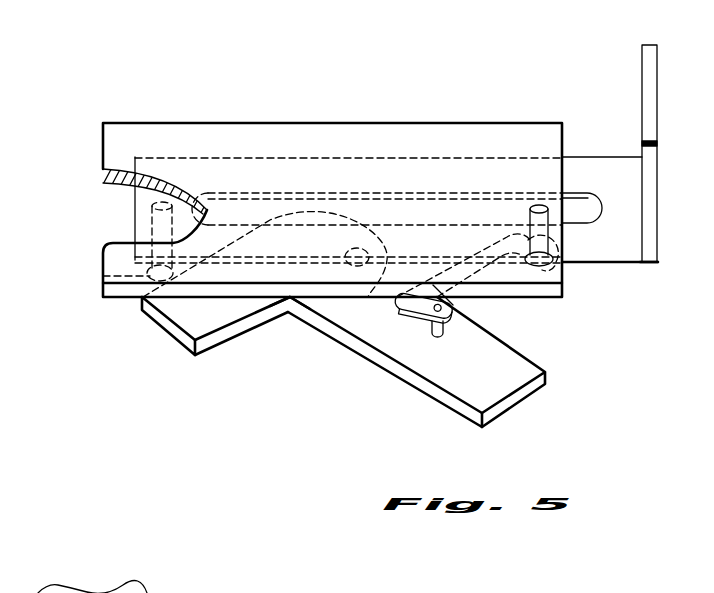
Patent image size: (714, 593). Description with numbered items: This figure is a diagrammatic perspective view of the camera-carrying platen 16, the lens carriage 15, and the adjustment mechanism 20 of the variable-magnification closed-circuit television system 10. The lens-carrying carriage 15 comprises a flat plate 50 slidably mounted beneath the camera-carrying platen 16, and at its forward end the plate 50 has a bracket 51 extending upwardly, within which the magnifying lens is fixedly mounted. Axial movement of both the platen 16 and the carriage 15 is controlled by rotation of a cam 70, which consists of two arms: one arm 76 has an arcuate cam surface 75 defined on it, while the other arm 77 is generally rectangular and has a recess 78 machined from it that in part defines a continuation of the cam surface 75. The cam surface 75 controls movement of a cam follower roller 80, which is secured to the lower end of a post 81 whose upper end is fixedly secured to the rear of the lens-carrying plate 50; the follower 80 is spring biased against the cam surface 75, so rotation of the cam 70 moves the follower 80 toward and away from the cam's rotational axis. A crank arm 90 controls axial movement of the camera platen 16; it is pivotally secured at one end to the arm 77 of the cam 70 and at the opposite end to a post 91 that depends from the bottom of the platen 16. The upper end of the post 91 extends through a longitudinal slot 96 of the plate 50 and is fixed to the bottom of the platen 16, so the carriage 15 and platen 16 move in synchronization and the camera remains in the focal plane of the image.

The variable-magnification closed-circuit television system 10 is at (335, 562).
The lens-carrying carriage 15 is at (658, 262).
The camera-carrying platen 16 is at (395, 130).
The adjustment mechanism 20 is at (293, 357).
The flat plate 50 is at (593, 250).
The bracket 51 is at (650, 158).
The cam 70 is at (347, 362).
The arcuate cam surface 75 is at (263, 240).
The arm 76 is at (173, 308).
The arm 77 is at (507, 360).
The recess 78 is at (397, 296).
The cam follower roller 80 is at (103, 277).
The post 81 is at (152, 230).
The crank arm 90 is at (482, 265).
The post 91 is at (548, 240).
The longitudinal slot 96 is at (583, 195).